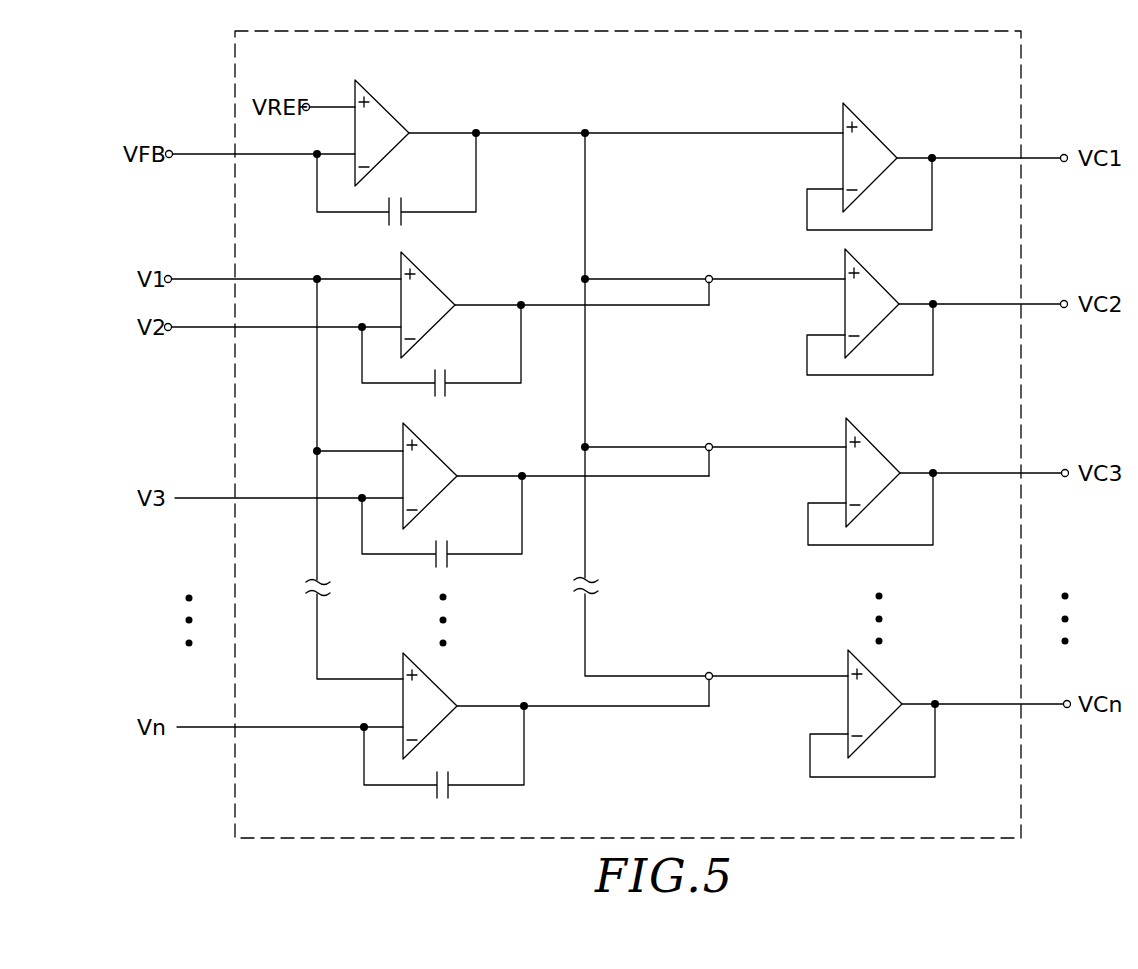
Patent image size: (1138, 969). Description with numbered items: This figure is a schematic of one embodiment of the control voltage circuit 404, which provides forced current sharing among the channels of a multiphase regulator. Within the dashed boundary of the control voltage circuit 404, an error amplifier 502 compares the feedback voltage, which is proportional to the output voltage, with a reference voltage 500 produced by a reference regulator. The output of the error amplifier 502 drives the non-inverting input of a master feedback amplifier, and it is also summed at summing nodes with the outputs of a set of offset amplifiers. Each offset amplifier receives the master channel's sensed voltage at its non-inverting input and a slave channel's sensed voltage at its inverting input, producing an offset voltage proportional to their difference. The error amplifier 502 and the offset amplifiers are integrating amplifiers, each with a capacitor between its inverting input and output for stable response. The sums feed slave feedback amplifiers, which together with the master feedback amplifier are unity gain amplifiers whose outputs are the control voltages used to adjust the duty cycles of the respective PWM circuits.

The control voltage circuit 404 is at (1022, 63).
The reference voltage 500 is at (280, 84).
The error amplifier 502 is at (383, 99).